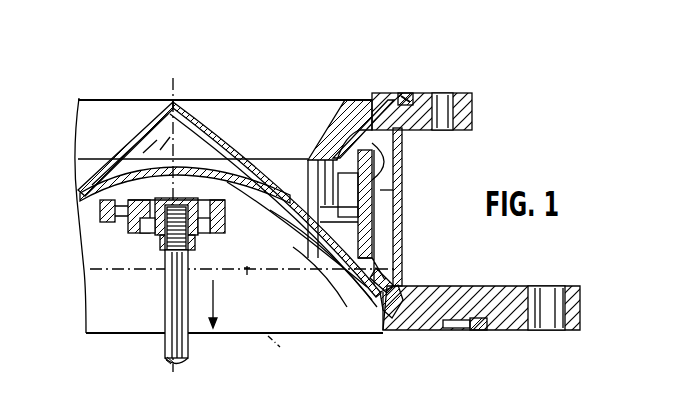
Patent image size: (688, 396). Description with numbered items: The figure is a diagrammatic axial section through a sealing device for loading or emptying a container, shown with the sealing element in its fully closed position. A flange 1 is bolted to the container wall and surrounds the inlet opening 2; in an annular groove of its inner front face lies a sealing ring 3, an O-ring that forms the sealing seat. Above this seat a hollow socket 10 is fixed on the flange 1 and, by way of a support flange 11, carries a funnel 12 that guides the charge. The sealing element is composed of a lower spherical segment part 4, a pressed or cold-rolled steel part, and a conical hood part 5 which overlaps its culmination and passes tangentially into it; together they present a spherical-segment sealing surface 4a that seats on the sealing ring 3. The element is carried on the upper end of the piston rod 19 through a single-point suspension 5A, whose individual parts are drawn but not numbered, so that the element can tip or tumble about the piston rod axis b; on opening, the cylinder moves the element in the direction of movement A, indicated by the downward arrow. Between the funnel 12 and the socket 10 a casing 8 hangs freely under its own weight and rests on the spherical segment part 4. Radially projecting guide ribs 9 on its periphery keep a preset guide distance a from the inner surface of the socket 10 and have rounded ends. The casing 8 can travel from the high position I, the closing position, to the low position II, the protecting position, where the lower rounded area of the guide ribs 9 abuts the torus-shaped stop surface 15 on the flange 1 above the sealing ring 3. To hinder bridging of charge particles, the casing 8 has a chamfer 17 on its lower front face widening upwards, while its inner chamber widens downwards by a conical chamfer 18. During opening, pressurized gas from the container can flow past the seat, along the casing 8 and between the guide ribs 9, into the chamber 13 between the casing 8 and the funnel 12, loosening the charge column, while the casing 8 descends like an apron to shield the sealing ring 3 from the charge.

The flange 1 is at (453, 318).
The inlet opening 2 is at (352, 282).
The sealing ring 3 is at (440, 297).
The spherical segment part 4 is at (383, 293).
The sealing surface 4a is at (386, 280).
The conical hood part 5 is at (232, 142).
The single-point suspension 5A is at (140, 241).
The casing 8 is at (350, 152).
The guide ribs 9 is at (402, 158).
The socket 10 is at (402, 201).
The support flange 11 is at (411, 97).
The funnel 12 is at (355, 130).
The chamber 13 is at (328, 160).
The stop surface 15 is at (375, 298).
The chamfer 17 is at (375, 258).
The conical chamfer 18 is at (385, 312).
The piston rod 19 is at (180, 341).
The guide distance a is at (398, 173).
The piston rod axis b is at (175, 313).
The direction of movement A is at (215, 303).
The high position I is at (248, 274).
The low position II is at (280, 347).